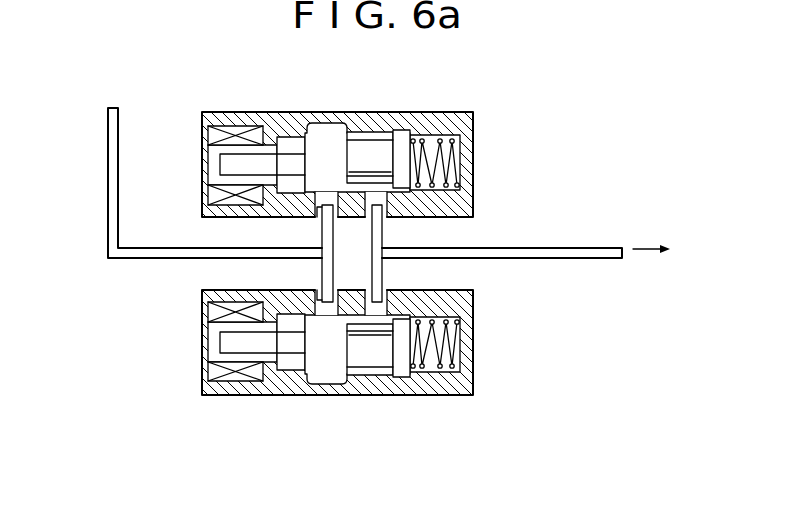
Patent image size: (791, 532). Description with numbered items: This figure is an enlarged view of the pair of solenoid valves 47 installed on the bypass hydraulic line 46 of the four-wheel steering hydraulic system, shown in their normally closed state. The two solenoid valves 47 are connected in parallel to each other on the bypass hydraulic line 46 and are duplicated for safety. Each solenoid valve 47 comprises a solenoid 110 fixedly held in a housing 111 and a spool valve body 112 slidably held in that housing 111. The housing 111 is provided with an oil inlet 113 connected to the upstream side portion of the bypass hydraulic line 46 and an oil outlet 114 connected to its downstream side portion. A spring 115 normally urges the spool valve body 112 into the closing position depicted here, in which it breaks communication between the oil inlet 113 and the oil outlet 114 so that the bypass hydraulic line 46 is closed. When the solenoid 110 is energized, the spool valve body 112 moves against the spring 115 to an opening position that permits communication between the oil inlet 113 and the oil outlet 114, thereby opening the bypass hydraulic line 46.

The bypass hydraulic line 46 is at (108, 223).
The solenoid valve 47 is at (355, 248).
The solenoid 110 is at (238, 118).
The housing 111 is at (300, 115).
The spool valve body 112 is at (335, 142).
The oil inlet 113 is at (323, 222).
The oil outlet 114 is at (382, 222).
The spring 115 is at (460, 165).